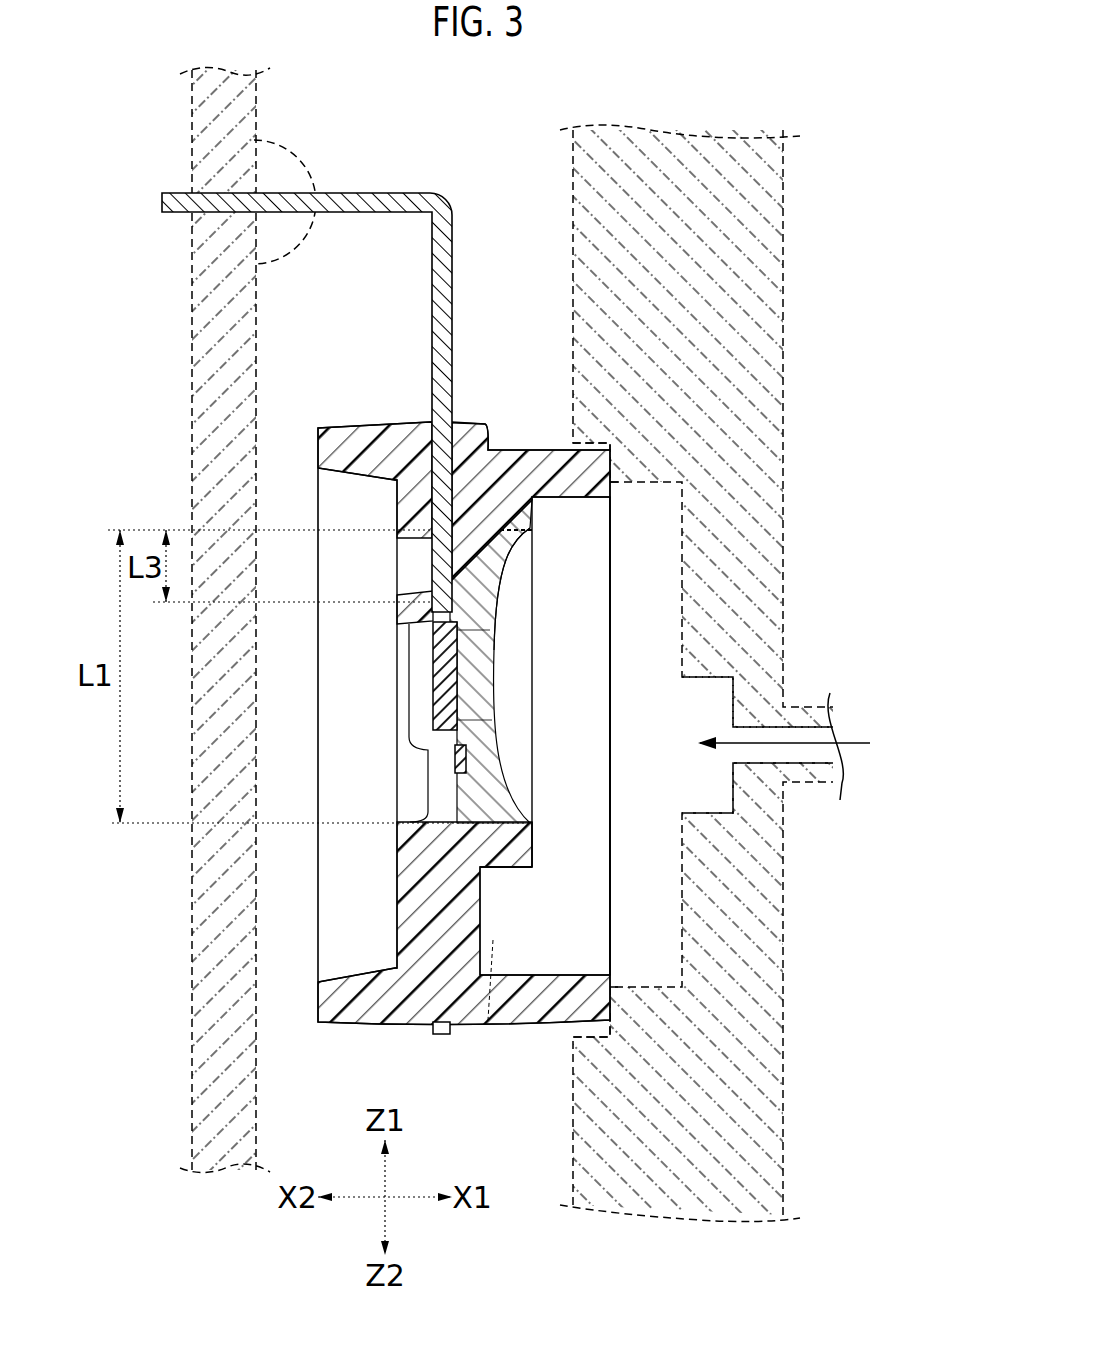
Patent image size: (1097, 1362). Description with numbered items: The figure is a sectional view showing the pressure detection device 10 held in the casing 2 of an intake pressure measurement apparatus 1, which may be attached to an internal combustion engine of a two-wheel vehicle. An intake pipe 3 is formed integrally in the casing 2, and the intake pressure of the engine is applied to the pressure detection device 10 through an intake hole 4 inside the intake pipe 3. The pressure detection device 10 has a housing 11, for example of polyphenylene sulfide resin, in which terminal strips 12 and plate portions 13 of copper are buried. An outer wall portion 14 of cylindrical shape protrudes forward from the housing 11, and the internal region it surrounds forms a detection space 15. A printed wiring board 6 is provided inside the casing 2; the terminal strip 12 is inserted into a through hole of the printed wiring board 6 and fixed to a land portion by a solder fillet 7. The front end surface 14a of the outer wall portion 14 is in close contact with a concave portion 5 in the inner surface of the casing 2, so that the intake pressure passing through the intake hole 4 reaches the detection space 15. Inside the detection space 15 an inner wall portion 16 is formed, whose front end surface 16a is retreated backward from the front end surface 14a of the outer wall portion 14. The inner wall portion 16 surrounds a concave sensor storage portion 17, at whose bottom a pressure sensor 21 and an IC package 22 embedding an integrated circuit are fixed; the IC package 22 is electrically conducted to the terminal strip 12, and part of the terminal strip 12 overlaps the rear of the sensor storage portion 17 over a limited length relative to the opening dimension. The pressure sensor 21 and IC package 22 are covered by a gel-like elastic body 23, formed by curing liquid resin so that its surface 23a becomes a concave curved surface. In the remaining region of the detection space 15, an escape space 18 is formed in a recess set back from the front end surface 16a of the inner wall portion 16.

The intake pressure measurement apparatus 1 is at (696, 98).
The casing 2 is at (783, 250).
The intake pipe 3 is at (800, 707).
The intake hole 4 is at (836, 737).
The concave portion 5 is at (603, 447).
The printed wiring board 6 is at (205, 305).
The solder fillets 7 is at (275, 180).
The pressure detection device 10 is at (417, 610).
The housing 11 is at (362, 1012).
The terminal strip 12 is at (385, 193).
The plate portion 13 is at (443, 1036).
The outer wall portion 14 is at (580, 498).
The front end surface of the outer wall portion 14a is at (615, 485).
The detection space 15 is at (600, 704).
The inner wall portion 16 is at (510, 864).
The front end surface of the inner wall portion 16a is at (533, 840).
The sensor storage portion 17 is at (503, 792).
The escape space 18 is at (490, 980).
The pressure sensor 21 is at (468, 758).
The IC package 22 is at (437, 672).
The elastic body 23 is at (482, 712).
The surface of the elastic body 23a is at (513, 603).